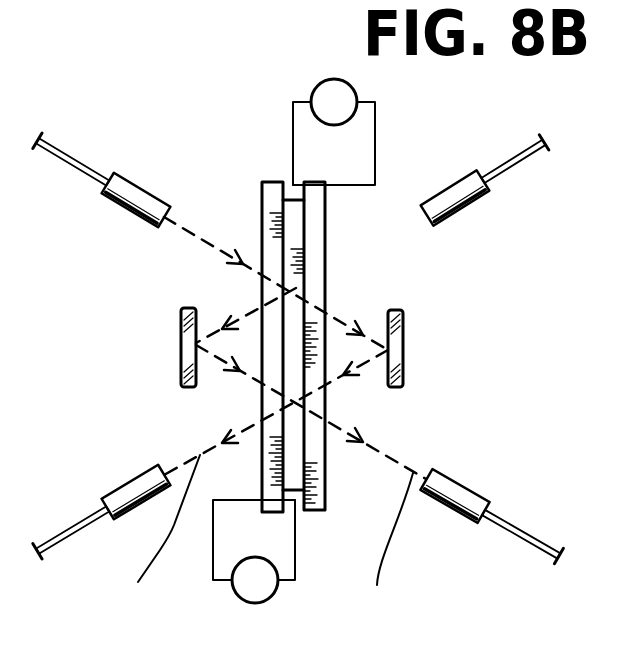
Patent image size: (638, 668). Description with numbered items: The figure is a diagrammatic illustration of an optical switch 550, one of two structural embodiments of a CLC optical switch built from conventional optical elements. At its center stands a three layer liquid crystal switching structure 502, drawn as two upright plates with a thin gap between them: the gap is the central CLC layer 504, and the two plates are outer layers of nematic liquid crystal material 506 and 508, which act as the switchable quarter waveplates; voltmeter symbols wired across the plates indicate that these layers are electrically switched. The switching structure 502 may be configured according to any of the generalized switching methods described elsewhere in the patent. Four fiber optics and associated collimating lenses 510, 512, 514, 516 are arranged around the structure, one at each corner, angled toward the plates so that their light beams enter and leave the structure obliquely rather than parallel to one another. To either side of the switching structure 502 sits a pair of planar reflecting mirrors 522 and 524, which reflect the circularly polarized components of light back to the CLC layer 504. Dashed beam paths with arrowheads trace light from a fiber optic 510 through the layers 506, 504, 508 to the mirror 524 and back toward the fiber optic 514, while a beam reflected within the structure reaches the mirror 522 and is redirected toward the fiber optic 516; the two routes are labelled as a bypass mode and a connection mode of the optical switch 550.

The optical switch 550 is at (536, 100).
The three layer liquid crystal switching structure 502 is at (272, 168).
The central CLC layer 504 is at (298, 247).
The outer layer of nematic liquid crystal material 506 is at (262, 207).
The outer layer of nematic liquid crystal material 508 is at (349, 346).
The fiber optic and associated collimating lens 510 is at (100, 147).
The fiber optic and associated collimating lens 512 is at (486, 175).
The fiber optic and associated collimating lens 514 is at (113, 472).
The fiber optic and associated collimating lens 516 is at (492, 496).
The planar reflecting mirror 522 is at (137, 347).
The planar reflecting mirror 524 is at (403, 345).